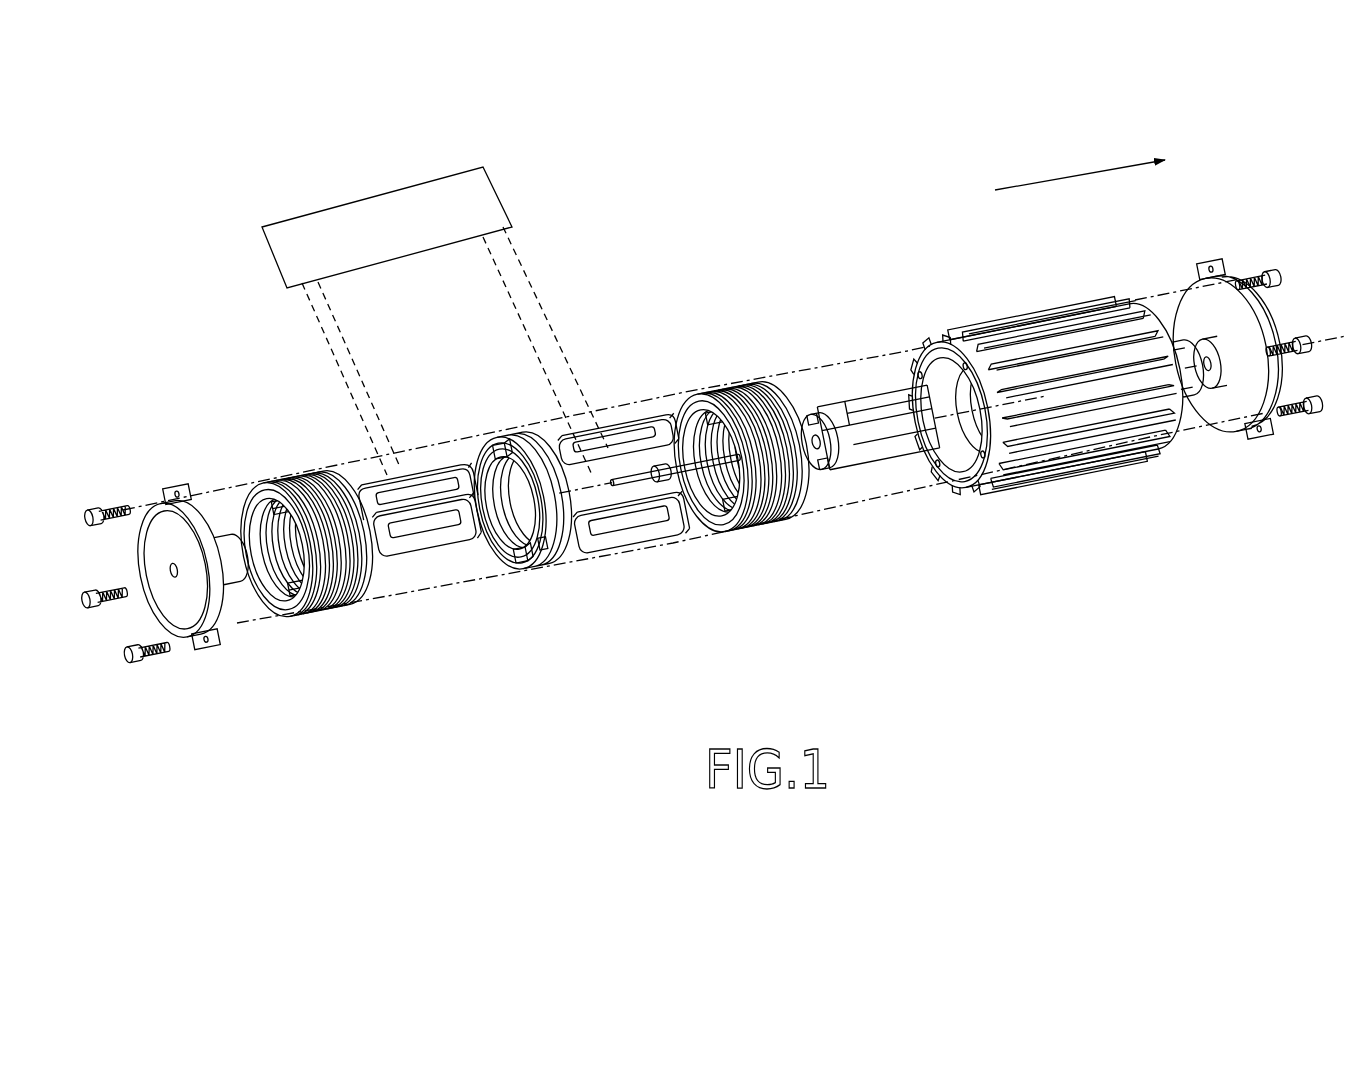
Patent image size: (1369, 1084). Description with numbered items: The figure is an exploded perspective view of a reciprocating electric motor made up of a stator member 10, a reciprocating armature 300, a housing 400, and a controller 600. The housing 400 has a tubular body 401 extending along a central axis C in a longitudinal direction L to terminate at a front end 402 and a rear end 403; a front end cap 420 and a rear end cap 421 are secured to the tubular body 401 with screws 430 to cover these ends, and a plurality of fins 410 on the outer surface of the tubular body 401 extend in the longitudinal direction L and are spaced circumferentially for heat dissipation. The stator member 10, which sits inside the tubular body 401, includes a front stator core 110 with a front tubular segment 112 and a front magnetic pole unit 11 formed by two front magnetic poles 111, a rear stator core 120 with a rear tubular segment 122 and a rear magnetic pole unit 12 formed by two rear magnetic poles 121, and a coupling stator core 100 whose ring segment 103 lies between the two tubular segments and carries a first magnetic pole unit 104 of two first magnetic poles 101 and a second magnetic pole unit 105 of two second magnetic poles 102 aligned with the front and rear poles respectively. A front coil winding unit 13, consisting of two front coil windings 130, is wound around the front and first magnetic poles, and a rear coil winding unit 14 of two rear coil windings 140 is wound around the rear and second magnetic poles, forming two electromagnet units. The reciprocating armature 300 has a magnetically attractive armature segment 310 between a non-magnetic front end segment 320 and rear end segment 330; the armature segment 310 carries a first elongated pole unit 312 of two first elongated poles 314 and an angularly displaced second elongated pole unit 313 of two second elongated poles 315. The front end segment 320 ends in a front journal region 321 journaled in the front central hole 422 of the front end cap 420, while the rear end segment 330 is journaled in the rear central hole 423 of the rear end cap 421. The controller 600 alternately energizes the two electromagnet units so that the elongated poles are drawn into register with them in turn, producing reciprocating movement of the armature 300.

The stator member 10 is at (438, 717).
The front magnetic pole unit 11 is at (290, 572).
The rear magnetic pole unit 12 is at (718, 474).
The front coil winding unit 13 is at (425, 506).
The rear coil winding unit 14 is at (635, 480).
The coupling stator core 100 is at (542, 498).
The first magnetic poles 101 is at (485, 490).
The second magnetic poles 102 is at (517, 445).
The ring segment 103 is at (548, 528).
The first magnetic pole unit 104 is at (577, 633).
The second magnetic pole unit 105 is at (532, 667).
The front stator core 110 is at (285, 524).
The front magnetic poles 111 is at (243, 540).
The front tubular segment 112 is at (290, 488).
The rear stator core 120 is at (745, 494).
The rear magnetic poles 121 is at (712, 425).
The rear tubular segment 122 is at (772, 517).
The front coil windings 130 is at (432, 470).
The rear coil windings 140 is at (640, 425).
The reciprocating armature 300 is at (845, 396).
The armature segment 310 is at (869, 420).
The first elongated pole unit 312 is at (812, 418).
The second elongated pole unit 313 is at (878, 378).
The first elongated poles 314 is at (820, 413).
The second elongated poles 315 is at (893, 403).
The front end segment 320 is at (806, 398).
The front journal region 321 is at (675, 475).
The rear end segment 330 is at (962, 415).
The housing 400 is at (1068, 392).
The tubular body 401 is at (1045, 297).
The front end 402 is at (982, 467).
The rear end 403 is at (1172, 437).
The fins 410 is at (940, 332).
The front end cap 420 is at (167, 593).
The rear end cap 421 is at (1254, 376).
The front central hole 422 is at (163, 572).
The rear central hole 423 is at (1225, 370).
The screws 430 is at (99, 507).
The controller 600 is at (495, 195).
The longitudinal direction L is at (1080, 168).
The central axis C is at (1313, 337).